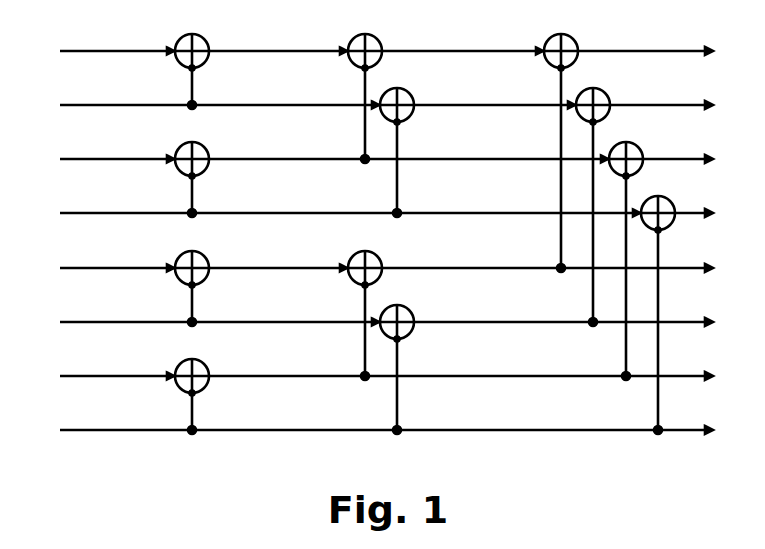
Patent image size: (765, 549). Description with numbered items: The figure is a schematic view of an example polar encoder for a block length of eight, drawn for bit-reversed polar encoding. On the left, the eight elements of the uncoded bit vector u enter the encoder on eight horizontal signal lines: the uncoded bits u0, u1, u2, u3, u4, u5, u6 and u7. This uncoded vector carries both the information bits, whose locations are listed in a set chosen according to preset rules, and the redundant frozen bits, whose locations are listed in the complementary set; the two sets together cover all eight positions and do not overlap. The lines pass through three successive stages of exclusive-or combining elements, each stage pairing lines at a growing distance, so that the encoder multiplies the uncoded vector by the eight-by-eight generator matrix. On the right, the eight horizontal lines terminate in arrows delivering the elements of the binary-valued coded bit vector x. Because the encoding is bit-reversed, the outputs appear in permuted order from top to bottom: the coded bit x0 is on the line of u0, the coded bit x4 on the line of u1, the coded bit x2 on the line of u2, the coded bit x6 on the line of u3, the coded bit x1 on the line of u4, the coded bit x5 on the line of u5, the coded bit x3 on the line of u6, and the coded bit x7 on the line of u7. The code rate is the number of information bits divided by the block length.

The uncoded bit u0 is at (320, 40).
The uncoded bit u1 is at (320, 94).
The uncoded bit u2 is at (320, 148).
The uncoded bit u3 is at (320, 202).
The uncoded bit u4 is at (320, 257).
The uncoded bit u5 is at (320, 311).
The uncoded bit u6 is at (320, 365).
The uncoded bit u7 is at (320, 419).
The coded bit x0 is at (661, 42).
The coded bit x1 is at (661, 259).
The coded bit x2 is at (661, 150).
The coded bit x3 is at (661, 367).
The coded bit x4 is at (661, 96).
The coded bit x5 is at (661, 313).
The coded bit x6 is at (661, 204).
The coded bit x7 is at (661, 421).